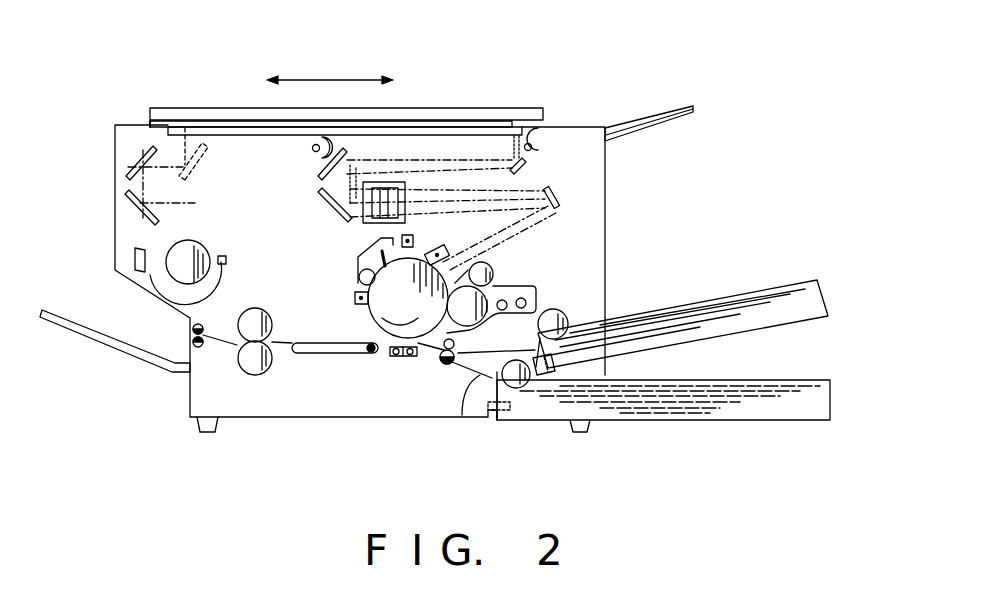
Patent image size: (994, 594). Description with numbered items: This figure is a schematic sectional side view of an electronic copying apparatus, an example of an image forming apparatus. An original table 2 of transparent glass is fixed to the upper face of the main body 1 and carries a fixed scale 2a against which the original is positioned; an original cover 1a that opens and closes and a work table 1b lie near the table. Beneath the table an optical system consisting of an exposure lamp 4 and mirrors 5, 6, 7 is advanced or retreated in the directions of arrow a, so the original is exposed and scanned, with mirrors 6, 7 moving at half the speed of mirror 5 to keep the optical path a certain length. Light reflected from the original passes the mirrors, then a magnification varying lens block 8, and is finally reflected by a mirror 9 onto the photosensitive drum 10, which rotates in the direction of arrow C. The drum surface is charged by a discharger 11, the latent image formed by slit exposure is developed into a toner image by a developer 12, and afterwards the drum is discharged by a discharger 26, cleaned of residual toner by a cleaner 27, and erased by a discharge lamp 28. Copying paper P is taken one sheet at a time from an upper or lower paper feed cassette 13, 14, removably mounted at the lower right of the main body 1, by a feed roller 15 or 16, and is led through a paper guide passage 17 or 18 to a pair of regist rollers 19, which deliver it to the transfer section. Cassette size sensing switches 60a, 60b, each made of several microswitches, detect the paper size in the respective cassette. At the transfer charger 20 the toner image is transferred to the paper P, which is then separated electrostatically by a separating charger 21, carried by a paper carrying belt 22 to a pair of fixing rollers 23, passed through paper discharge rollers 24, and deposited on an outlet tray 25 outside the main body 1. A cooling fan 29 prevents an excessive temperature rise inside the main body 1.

The main body 1 is at (607, 180).
The original cover 1a is at (455, 108).
The work table 1b is at (698, 104).
The original table 2 is at (245, 137).
The fixed scale 2a is at (152, 123).
The arrow a is at (330, 78).
The exposure lamp 4 is at (306, 152).
The mirror 5 is at (527, 163).
The mirror 6 is at (320, 178).
The mirror 7 is at (330, 205).
The magnification varying lens block 8 is at (367, 225).
The mirror 9 is at (559, 197).
The photosensitive drum 10 is at (371, 322).
The arrow c C is at (384, 305).
The discharger 11 is at (449, 255).
The developer 12 is at (522, 285).
The upper paper feed cassette 13 is at (812, 318).
The lower paper feed cassette 14 is at (756, 422).
The feed roller 15 is at (565, 314).
The feed roller 16 is at (517, 390).
The paper guide passage 17 is at (521, 337).
The paper guide passage 18 is at (463, 416).
The regist rollers 19 is at (450, 365).
The transfer charger 20 is at (411, 357).
The separating charger 21 is at (392, 357).
The paper carrying belt 22 is at (328, 356).
The fixing rollers 23 is at (271, 374).
The paper discharge rollers 24 is at (198, 350).
The outlet tray 25 is at (115, 347).
The discharger 26 is at (355, 298).
The cleaner 27 is at (358, 277).
The discharge lamp 28 is at (414, 246).
The cooling fan 29 is at (212, 248).
The cassette size sensing switch 60a is at (555, 380).
The cassette size sensing switch 60b is at (490, 395).
The copying paper P is at (757, 290).